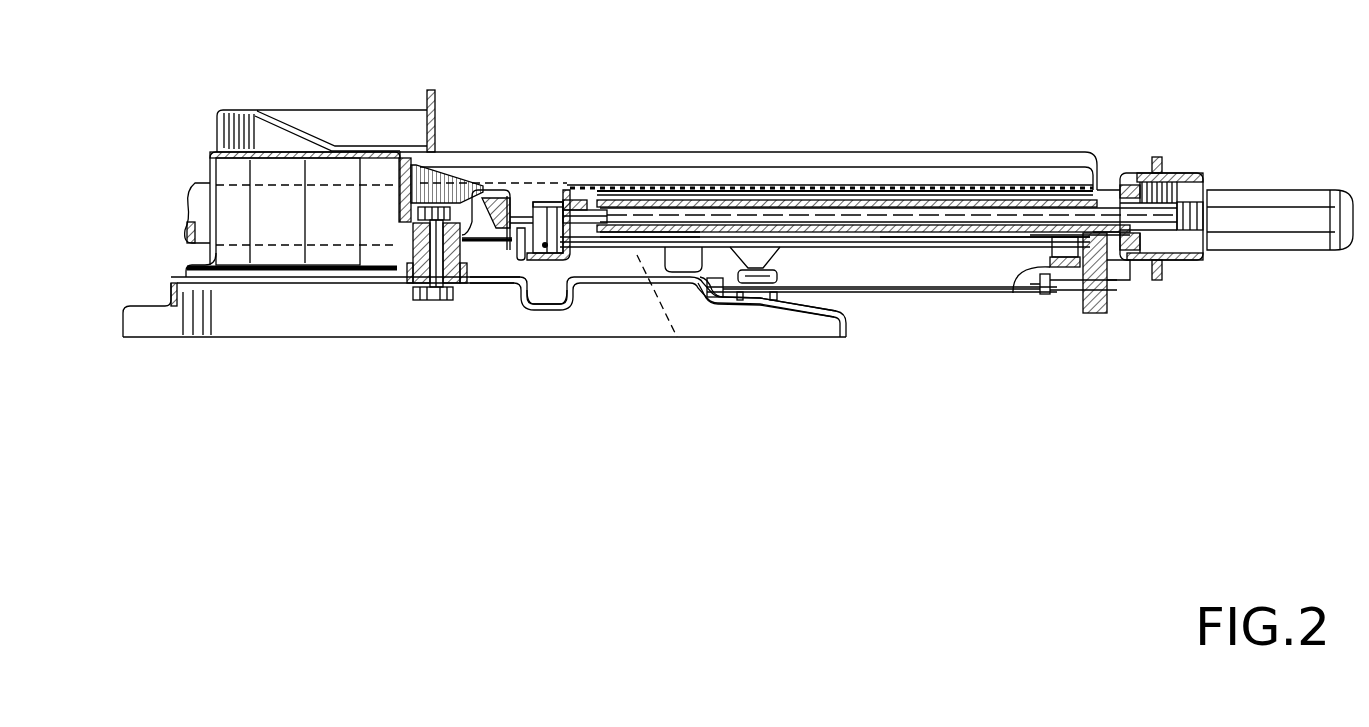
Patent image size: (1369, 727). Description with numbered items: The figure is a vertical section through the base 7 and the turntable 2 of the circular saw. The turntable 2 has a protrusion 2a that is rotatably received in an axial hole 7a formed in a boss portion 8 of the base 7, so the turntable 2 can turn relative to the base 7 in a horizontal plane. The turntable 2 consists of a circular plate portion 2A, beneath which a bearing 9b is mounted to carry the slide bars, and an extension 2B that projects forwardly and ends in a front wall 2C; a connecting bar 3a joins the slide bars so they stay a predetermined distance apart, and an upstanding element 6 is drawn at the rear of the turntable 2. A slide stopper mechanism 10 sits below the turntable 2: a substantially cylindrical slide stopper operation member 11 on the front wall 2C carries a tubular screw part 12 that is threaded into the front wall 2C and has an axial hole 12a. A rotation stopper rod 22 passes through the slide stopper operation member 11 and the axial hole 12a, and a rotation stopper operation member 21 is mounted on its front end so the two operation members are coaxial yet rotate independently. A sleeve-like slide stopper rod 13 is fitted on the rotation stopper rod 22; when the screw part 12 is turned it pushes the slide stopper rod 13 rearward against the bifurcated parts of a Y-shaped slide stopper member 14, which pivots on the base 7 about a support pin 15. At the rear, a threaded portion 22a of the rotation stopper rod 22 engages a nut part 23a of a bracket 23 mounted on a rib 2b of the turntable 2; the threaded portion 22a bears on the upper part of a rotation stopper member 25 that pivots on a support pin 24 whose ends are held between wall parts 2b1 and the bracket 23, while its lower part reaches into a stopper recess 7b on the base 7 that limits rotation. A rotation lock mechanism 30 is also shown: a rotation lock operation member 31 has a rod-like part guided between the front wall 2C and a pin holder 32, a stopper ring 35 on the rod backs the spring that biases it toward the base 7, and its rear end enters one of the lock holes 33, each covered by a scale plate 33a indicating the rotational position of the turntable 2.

The turntable 2 is at (758, 135).
The circular plate portion 2A is at (643, 185).
The extension 2B is at (912, 152).
The front wall 2C is at (1115, 314).
The protrusion 2a is at (487, 185).
The rib 2b is at (505, 195).
The wall parts 2b1 is at (572, 192).
The connecting bar 3a is at (1015, 270).
The flange 6 is at (427, 100).
The base 7 is at (235, 306).
The axial hole 7a is at (480, 288).
The stopper recess 7b is at (557, 310).
The boss portion 8 is at (400, 256).
The bearing 9b is at (277, 223).
The slide stopper mechanism 10 is at (660, 238).
The slide stopper operation member 11 is at (1160, 157).
The screw part 12 is at (1120, 180).
The axial hole 12a is at (1050, 185).
The slide stopper rod 13 is at (882, 240).
The slide stopper member 14 is at (672, 185).
The support pin 15 is at (648, 242).
The rotation stopper operation member 21 is at (1248, 190).
The rotation stopper rod 22 is at (800, 208).
The threaded portion 22a is at (603, 243).
The bracket 23 is at (588, 237).
The nut part 23a is at (590, 200).
The support pin 24 is at (527, 263).
The rotation stopper member 25 is at (555, 202).
The rotation lock mechanism 30 is at (927, 305).
The rotation lock operation member 31 is at (973, 292).
The pin holder 32 is at (780, 276).
The lock holes 33 is at (752, 284).
The scale plate 33a is at (740, 250).
The stopper ring 35 is at (1048, 296).